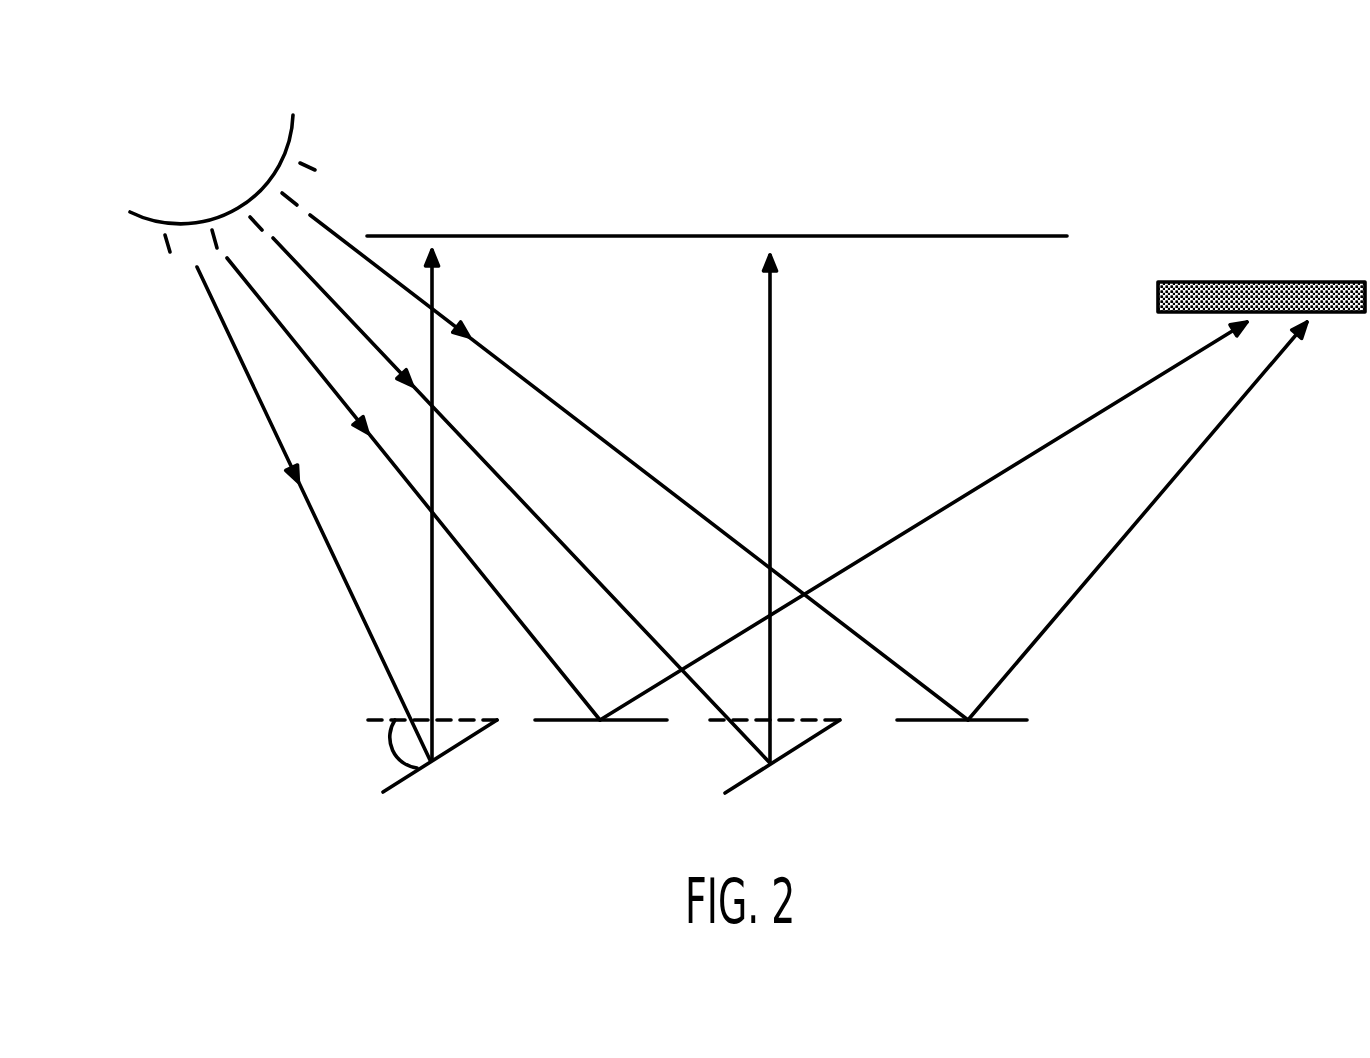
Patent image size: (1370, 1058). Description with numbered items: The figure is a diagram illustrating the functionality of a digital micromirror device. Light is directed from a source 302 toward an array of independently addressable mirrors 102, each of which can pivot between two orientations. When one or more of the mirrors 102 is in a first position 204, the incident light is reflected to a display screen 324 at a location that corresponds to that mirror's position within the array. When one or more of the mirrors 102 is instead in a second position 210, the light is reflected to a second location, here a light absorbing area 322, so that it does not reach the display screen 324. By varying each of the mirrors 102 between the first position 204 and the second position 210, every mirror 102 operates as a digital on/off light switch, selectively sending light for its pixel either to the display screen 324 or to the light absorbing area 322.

The source 302 is at (293, 133).
The display screen 324 is at (958, 233).
The light absorbing area 322 is at (1158, 295).
The mirrors 102 is at (465, 745).
The second position 210 is at (1033, 715).
The first position 204 is at (392, 752).